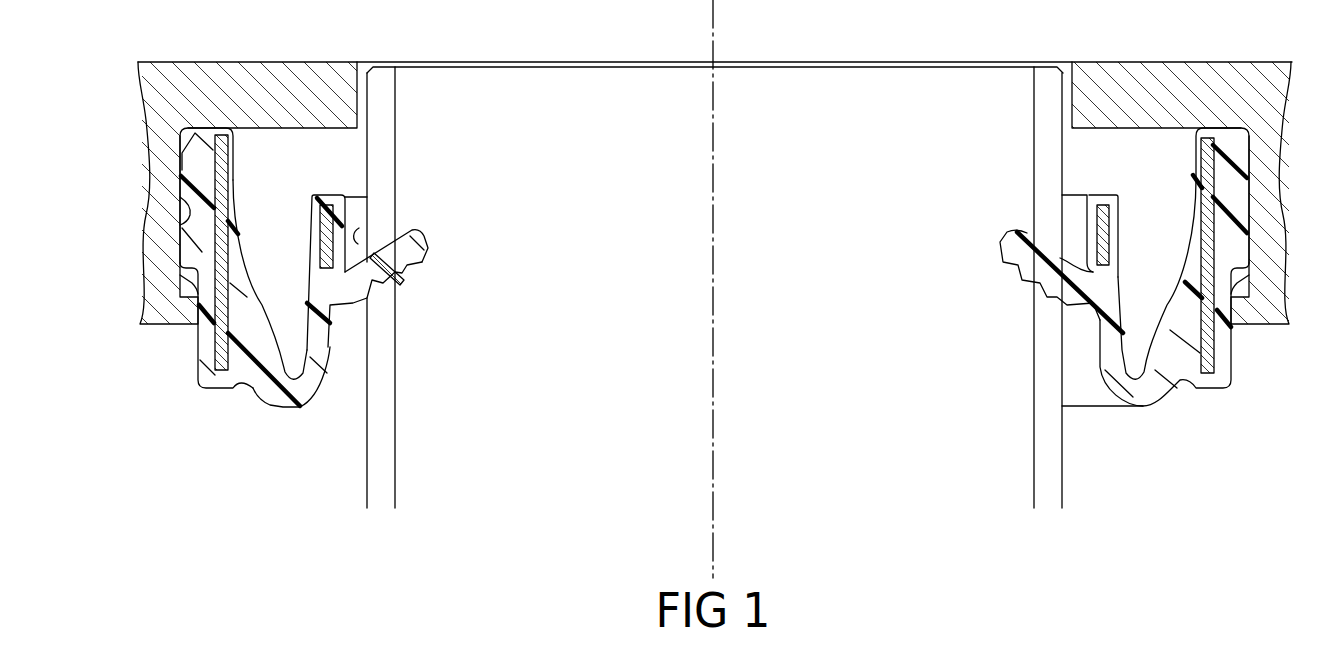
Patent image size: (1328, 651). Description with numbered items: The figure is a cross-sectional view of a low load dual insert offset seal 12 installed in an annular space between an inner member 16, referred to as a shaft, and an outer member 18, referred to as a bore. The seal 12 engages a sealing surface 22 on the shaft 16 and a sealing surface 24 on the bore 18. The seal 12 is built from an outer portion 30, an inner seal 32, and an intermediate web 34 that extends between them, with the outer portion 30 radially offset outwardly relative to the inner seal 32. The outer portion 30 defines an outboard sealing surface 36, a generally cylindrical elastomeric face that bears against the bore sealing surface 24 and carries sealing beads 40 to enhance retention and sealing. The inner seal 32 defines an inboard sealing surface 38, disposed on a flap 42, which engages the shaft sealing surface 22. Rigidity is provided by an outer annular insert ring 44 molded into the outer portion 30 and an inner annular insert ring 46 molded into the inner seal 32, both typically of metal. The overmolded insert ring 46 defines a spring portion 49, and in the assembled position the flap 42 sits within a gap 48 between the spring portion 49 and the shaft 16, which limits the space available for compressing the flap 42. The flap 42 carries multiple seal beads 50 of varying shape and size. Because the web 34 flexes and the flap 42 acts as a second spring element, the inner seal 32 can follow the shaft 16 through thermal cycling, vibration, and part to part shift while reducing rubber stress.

The seal 12 is at (209, 317).
The inner member 16 is at (487, 72).
The outer member 18 is at (182, 66).
The sealing surface 22 is at (364, 148).
The sealing surface 24 is at (182, 275).
The outer portion 30 is at (213, 382).
The inner seal 32 is at (358, 213).
The intermediate web 34 is at (283, 407).
The outboard sealing surface 36 is at (180, 202).
The inboard sealing surface 38 is at (691, 250).
The sealing beads 40 is at (180, 185).
The flap 42 is at (428, 237).
The outer annular insert ring 44 is at (223, 198).
The inner annular insert ring 46 is at (323, 232).
The gap 48 is at (356, 234).
The spring portion 49 is at (1090, 230).
The seal beads 50 is at (415, 293).